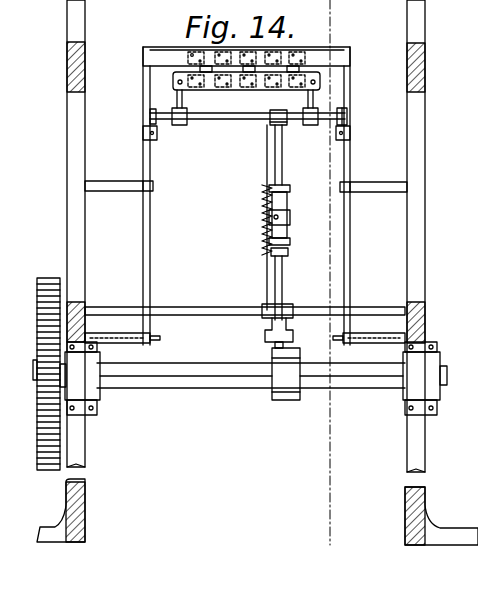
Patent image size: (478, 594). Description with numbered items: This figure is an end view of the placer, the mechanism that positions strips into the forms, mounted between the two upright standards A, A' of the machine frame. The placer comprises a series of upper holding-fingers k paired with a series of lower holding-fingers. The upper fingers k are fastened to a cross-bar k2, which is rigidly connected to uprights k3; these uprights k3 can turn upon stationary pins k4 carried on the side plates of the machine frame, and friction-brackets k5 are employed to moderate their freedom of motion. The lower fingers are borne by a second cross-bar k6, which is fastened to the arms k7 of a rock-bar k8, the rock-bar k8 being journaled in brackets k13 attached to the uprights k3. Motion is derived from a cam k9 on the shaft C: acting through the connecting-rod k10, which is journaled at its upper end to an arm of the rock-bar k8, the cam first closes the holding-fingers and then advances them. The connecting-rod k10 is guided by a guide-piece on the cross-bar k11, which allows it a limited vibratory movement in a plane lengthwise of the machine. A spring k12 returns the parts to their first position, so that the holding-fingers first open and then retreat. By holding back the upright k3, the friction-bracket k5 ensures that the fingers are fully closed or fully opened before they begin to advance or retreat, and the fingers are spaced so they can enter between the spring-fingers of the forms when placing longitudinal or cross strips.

The upright standard A is at (61, 271).
The upright standard A' is at (441, 272).
The shaft C is at (256, 378).
The upper holding-fingers k is at (254, 374).
The cross-bar k2 is at (322, 52).
The uprights k3 is at (143, 98).
The stationary pins k4 is at (114, 340).
The friction-brackets k5 is at (116, 181).
The cross-bar k6 is at (208, 88).
The arms k7 is at (177, 98).
The rock-bar k8 is at (209, 121).
The cam k9 is at (272, 358).
The connecting-rod k10 is at (283, 270).
The cross-bar k11 is at (241, 302).
The spring k12 is at (262, 253).
The brackets k13 is at (347, 117).